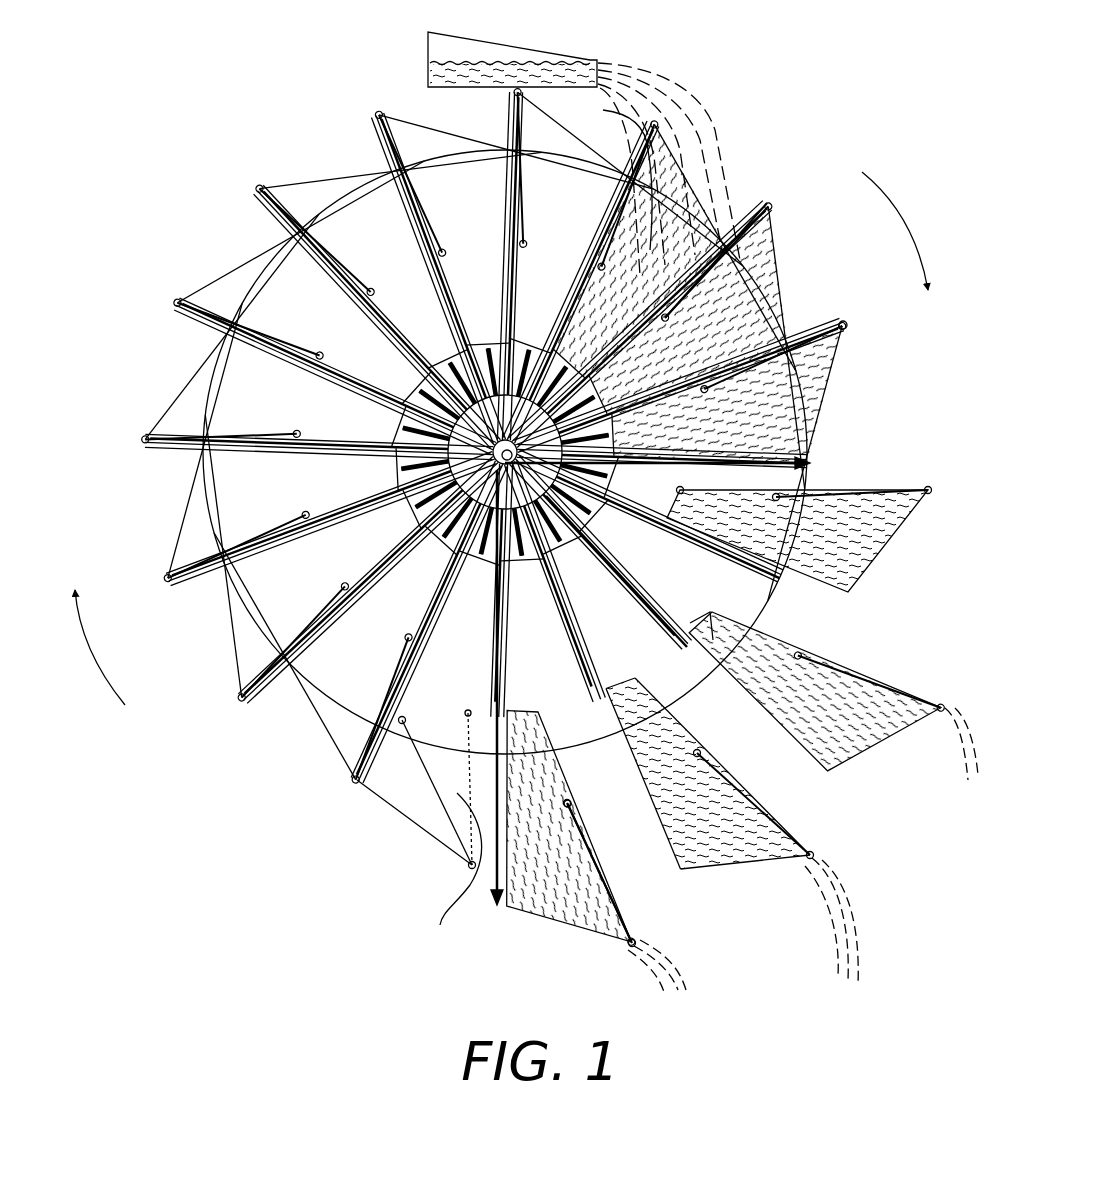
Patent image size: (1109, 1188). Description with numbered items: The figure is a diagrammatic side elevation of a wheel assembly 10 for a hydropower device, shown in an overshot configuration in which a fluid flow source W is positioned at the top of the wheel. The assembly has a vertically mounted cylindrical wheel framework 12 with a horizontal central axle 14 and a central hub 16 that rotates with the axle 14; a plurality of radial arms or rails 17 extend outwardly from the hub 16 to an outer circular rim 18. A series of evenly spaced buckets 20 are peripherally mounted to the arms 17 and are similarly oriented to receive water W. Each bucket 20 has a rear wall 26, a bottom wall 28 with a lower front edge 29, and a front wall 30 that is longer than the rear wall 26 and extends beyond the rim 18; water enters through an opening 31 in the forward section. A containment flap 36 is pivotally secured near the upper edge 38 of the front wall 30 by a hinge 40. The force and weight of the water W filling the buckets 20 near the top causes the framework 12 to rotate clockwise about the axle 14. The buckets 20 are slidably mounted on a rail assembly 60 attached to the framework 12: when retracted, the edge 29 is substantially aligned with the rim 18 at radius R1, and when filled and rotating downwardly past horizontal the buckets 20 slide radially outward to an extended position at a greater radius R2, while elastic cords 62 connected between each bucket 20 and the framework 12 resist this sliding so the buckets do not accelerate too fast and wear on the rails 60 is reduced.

The wheel assembly 10 is at (190, 770).
The wheel framework 12 is at (676, 680).
The central axle 14 is at (385, 178).
The central hub 16 is at (205, 437).
The radial arms 17 is at (372, 790).
The outer circular rim 18 is at (293, 232).
The buckets 20 is at (192, 300).
The rear wall 26 is at (680, 490).
The bottom wall 28 is at (832, 607).
The lower front edge 29 is at (287, 665).
The front wall 30 is at (430, 118).
The opening 31 is at (539, 523).
The containment flap 36 is at (443, 807).
The upper edge 38 is at (848, 345).
The hinge 40 is at (355, 783).
The rail assembly 60 is at (703, 612).
The elastic cords 62 is at (655, 585).
The radius R1 is at (795, 478).
The second radius R2 is at (493, 875).
The fluid flow source W is at (584, 137).